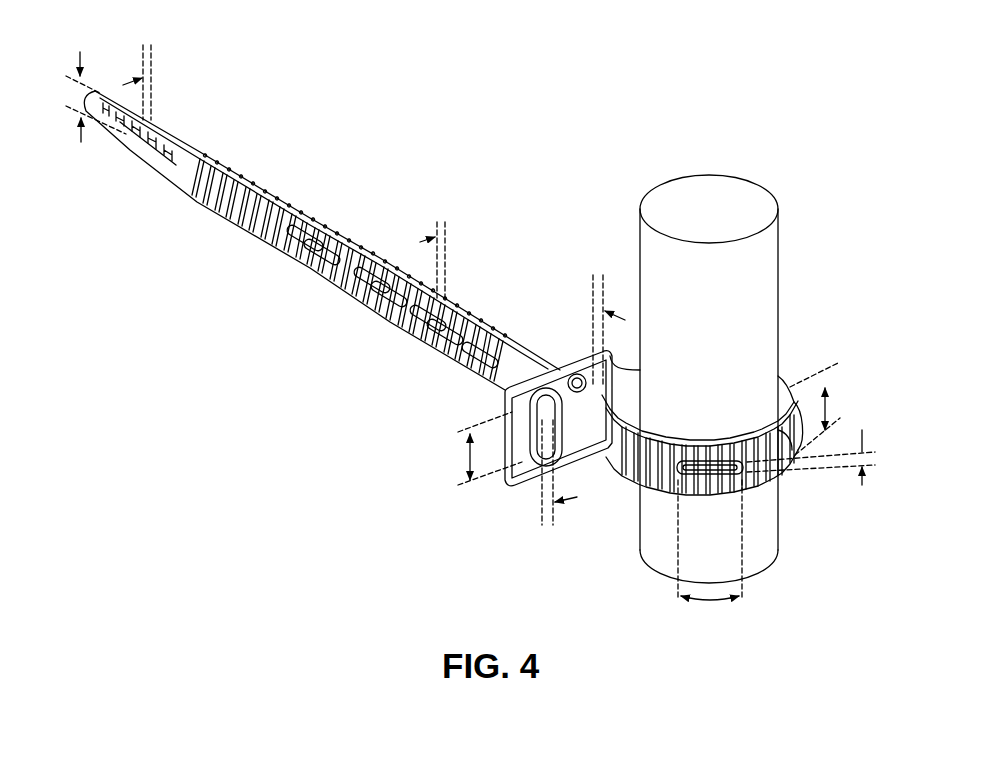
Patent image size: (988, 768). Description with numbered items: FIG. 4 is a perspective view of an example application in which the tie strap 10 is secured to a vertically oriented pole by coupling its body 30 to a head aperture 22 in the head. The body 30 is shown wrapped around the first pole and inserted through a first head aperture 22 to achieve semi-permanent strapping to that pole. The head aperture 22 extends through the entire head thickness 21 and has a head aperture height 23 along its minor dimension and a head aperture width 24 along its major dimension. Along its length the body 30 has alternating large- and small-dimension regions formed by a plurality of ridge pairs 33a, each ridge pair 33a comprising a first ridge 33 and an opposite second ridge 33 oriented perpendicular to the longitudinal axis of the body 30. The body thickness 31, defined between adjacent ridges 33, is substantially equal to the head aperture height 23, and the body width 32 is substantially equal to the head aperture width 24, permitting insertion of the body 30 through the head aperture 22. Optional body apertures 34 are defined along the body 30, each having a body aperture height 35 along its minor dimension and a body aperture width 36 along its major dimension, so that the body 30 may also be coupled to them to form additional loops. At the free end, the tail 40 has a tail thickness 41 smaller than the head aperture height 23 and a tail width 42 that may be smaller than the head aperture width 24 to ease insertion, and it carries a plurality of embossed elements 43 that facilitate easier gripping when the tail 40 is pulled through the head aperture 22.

The tie strap 10 is at (447, 142).
The head thickness 21 is at (590, 294).
The head aperture 22 is at (548, 440).
The head aperture height 23 is at (538, 511).
The head aperture width 24 is at (462, 462).
The body 30 is at (357, 244).
The body thickness 31 is at (449, 232).
The body width 32 is at (835, 404).
The ridge 33 is at (313, 208).
The ridge pair 33a is at (248, 183).
The body aperture 34 is at (430, 322).
The body aperture height 35 is at (863, 484).
The body aperture width 36 is at (712, 597).
The tail 40 is at (82, 100).
The tail thickness 41 is at (153, 70).
The tail width 42 is at (80, 127).
The embossed element 43 is at (153, 155).